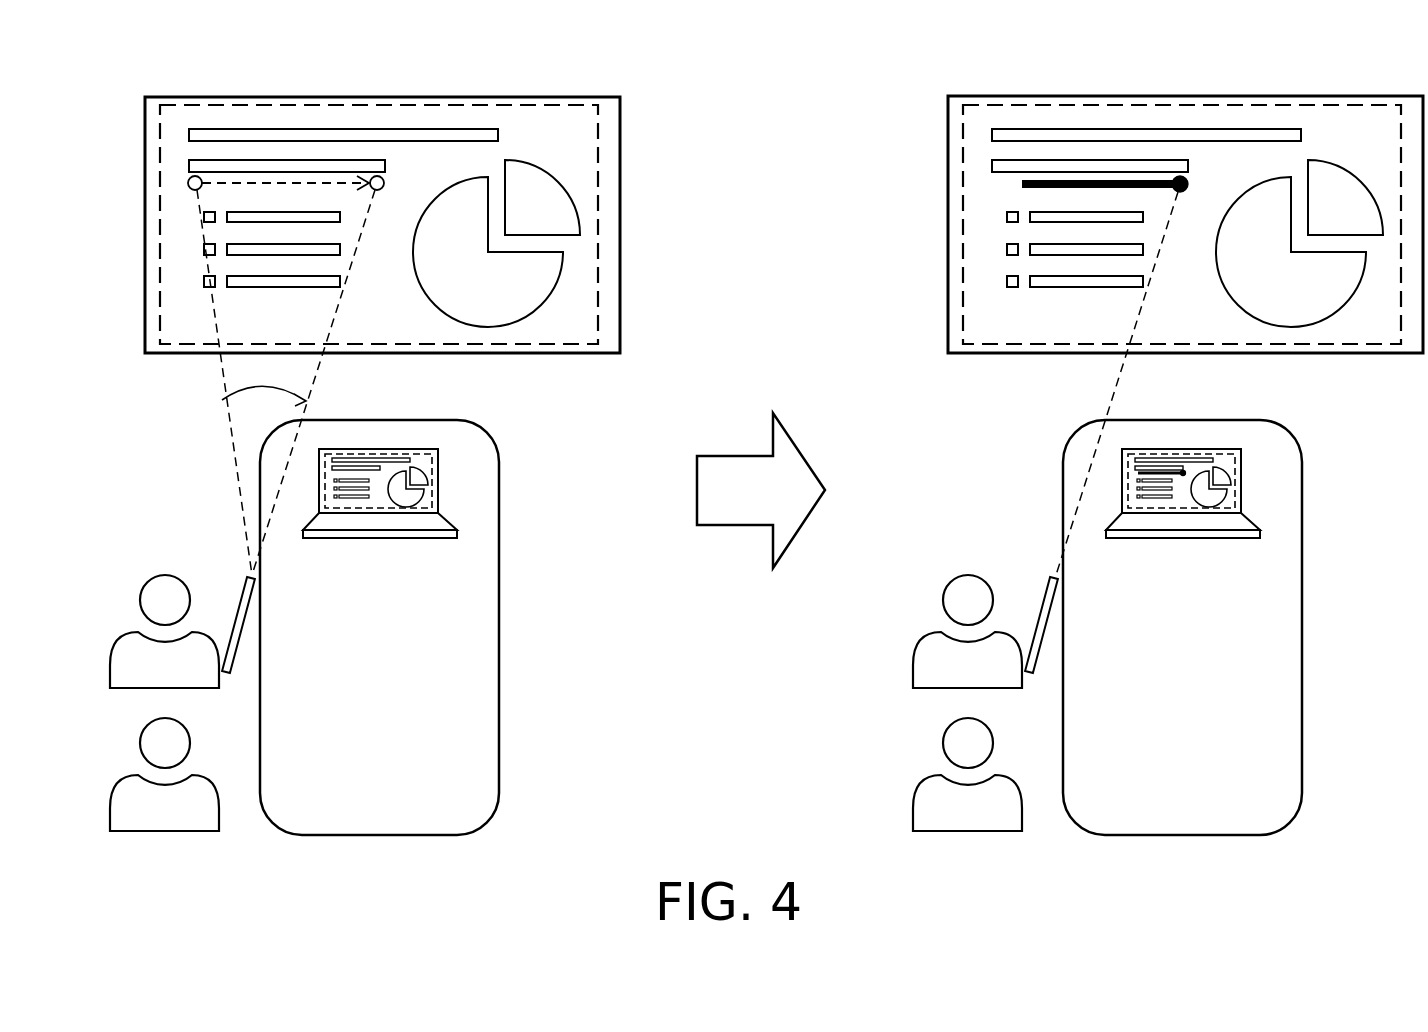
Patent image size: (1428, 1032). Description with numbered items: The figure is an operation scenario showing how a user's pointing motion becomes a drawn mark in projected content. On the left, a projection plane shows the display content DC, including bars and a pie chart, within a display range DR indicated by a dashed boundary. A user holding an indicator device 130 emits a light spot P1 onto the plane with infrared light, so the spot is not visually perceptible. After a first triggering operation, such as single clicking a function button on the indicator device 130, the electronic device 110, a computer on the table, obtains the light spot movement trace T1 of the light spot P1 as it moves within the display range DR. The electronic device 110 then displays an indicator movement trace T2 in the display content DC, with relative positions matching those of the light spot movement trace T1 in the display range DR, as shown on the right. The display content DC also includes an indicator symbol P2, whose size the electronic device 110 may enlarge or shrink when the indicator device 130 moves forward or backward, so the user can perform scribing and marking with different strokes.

The light spot movement trace T1 is at (254, 183).
The light spot P1 is at (188, 183).
The display content DC is at (551, 131).
The display range DR is at (548, 346).
The electronic device 110 is at (428, 503).
The indicator device 130 is at (240, 604).
The indicator movement trace T2 is at (1057, 183).
The indicator symbol P2 is at (1190, 184).